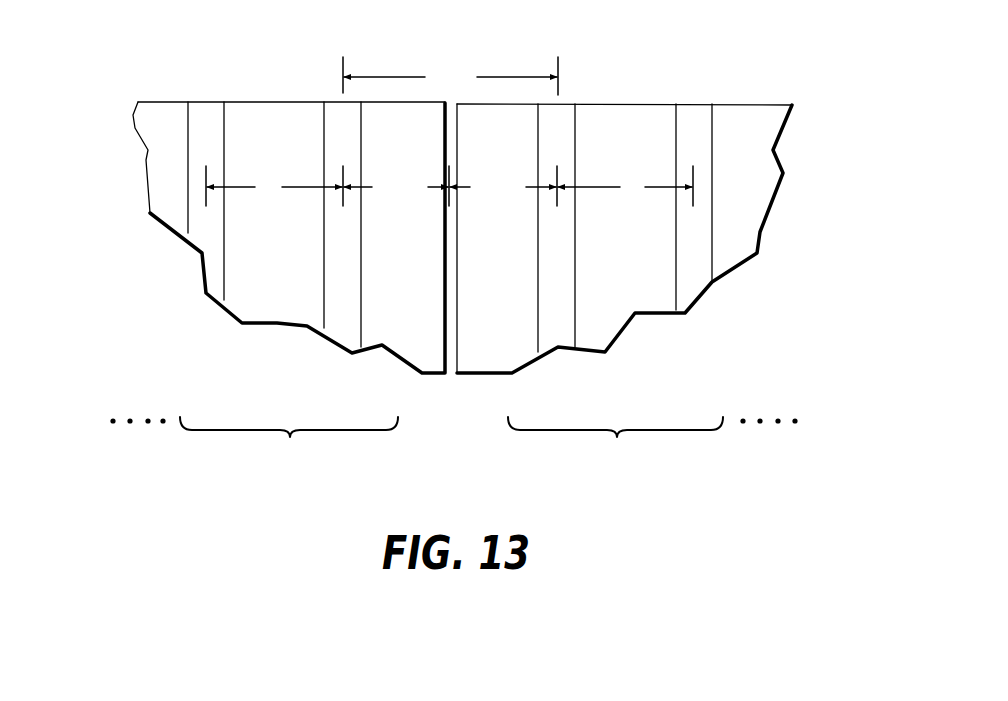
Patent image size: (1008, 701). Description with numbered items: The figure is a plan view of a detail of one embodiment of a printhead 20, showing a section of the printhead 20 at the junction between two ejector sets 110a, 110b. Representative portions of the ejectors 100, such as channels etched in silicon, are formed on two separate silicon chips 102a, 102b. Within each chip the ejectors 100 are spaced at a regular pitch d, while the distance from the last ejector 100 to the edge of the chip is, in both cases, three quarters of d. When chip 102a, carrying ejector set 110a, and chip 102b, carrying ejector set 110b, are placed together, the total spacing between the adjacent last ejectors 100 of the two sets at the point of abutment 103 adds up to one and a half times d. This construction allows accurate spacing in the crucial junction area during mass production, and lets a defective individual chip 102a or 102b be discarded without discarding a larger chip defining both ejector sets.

The printhead 20 is at (762, 75).
The ejector 100 is at (208, 108).
The silicon chip 102a is at (155, 173).
The silicon chip 102b is at (770, 177).
The point of abutment 103 is at (452, 375).
The ejector set 110a is at (289, 443).
The ejector set 110b is at (615, 443).